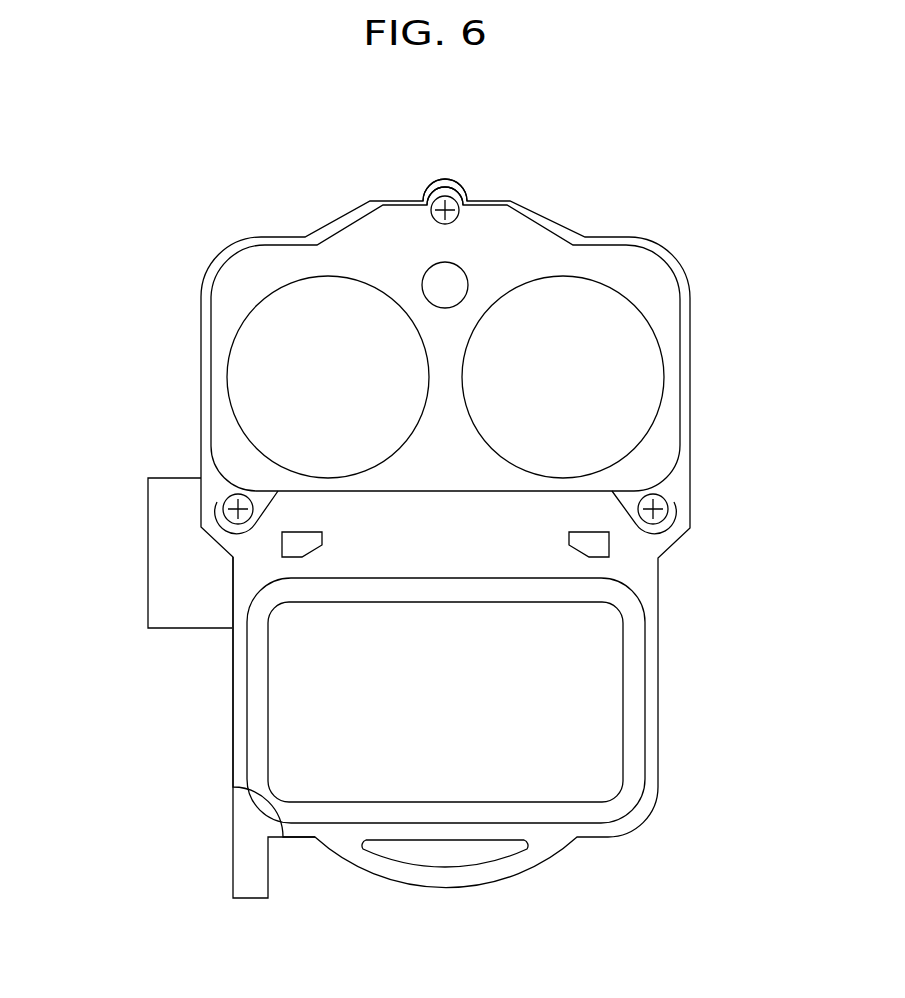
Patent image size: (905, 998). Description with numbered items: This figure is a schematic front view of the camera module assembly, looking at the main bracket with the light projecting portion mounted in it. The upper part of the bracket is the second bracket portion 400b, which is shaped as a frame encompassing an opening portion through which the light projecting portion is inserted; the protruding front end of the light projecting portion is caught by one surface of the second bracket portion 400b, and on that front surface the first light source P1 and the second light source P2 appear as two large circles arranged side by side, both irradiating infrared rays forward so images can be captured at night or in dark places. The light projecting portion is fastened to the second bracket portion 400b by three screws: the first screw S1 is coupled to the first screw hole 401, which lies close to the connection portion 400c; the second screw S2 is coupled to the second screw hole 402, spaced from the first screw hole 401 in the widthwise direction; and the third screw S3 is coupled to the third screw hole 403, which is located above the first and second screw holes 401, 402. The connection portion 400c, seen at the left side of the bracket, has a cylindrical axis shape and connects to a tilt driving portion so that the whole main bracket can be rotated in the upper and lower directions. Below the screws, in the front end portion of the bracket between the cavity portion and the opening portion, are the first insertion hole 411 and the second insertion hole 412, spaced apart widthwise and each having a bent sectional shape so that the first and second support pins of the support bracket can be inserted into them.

The second bracket portion 400b is at (532, 211).
The connection portion 400c is at (160, 588).
The third screw hole 403 is at (463, 192).
The first screw hole 401 is at (220, 497).
The second screw hole 402 is at (671, 497).
The first insertion hole 411 is at (293, 543).
The second insertion hole 412 is at (600, 547).
The first screw S1 is at (230, 511).
The second screw S2 is at (657, 513).
The third screw S3 is at (438, 192).
The first light source P1 is at (312, 302).
The second light source P2 is at (573, 302).